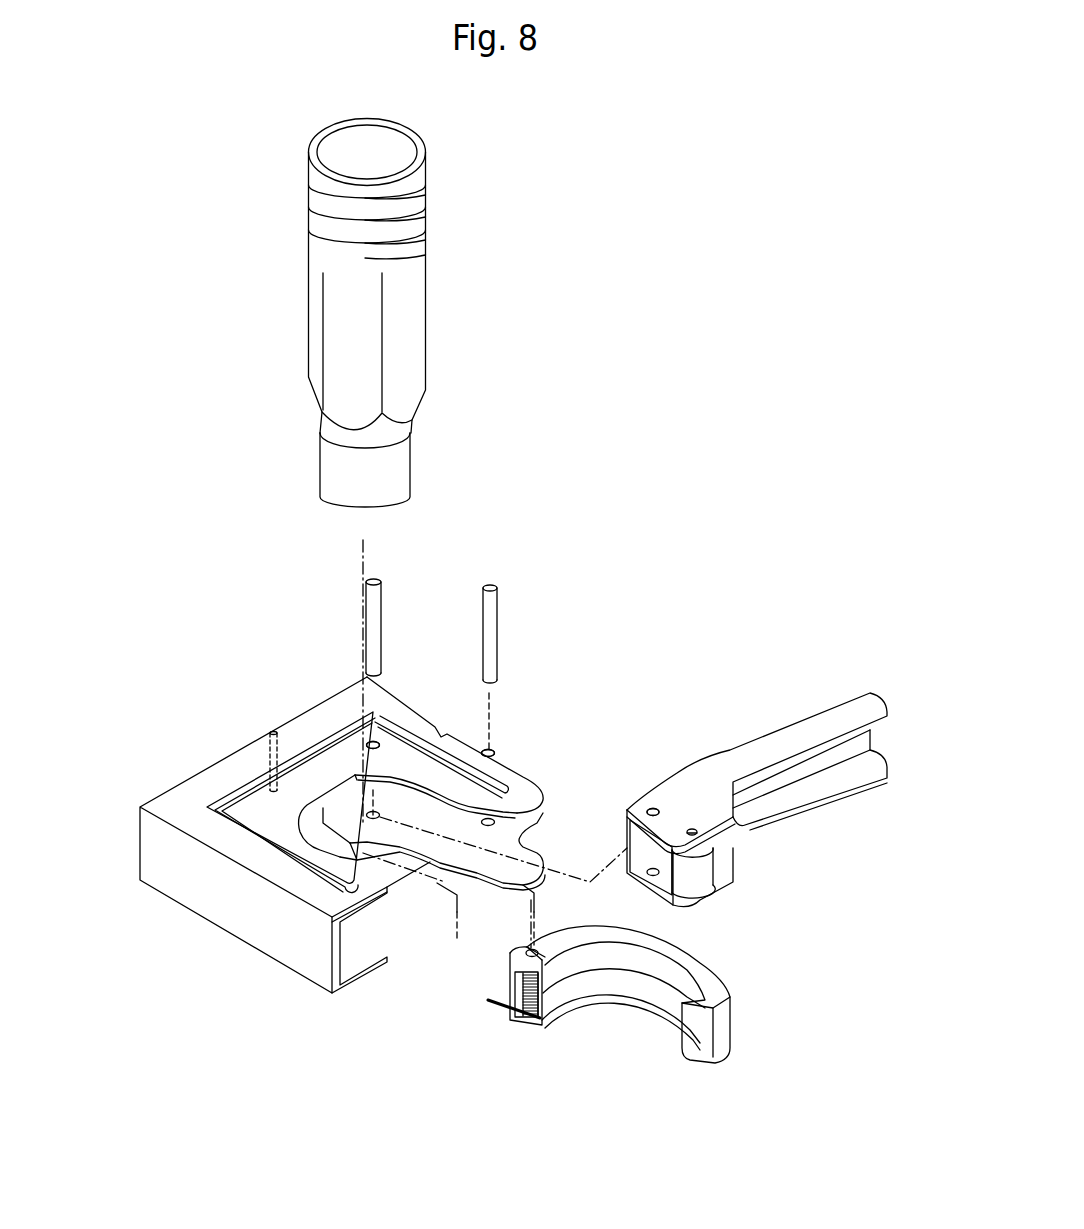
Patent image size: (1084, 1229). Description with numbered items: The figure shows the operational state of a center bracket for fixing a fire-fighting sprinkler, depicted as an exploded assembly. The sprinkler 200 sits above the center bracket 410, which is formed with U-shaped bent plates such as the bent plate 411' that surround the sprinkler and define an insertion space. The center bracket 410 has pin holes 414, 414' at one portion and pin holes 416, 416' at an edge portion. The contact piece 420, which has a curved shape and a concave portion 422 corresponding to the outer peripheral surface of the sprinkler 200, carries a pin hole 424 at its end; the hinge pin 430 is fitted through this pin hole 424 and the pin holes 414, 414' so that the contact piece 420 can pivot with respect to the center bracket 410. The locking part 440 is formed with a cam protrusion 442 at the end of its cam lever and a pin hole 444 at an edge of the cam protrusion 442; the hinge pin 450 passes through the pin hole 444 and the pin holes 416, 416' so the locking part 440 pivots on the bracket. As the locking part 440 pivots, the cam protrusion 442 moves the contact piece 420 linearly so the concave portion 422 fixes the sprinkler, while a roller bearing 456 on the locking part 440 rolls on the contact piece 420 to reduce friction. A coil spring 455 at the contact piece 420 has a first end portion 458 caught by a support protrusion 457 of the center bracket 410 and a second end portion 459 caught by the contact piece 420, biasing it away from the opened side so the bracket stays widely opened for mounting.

The sprinkler 200 is at (447, 411).
The center bracket 410 is at (175, 913).
The bent plate 411' is at (255, 987).
The pin hole 414 is at (272, 714).
The pin hole 414' is at (240, 788).
The pin hole 416 is at (455, 791).
The pin hole 416' is at (550, 786).
The contact piece 420 is at (722, 1013).
The concave portion 422 is at (647, 952).
The pin hole 424 is at (505, 994).
The hinge pin 430 is at (370, 617).
The locking part 440 is at (731, 732).
The cam protrusion 442 is at (720, 893).
The pin hole 444 is at (653, 808).
The hinge pin 450 is at (490, 623).
The coil spring 455 is at (535, 973).
The roller bearing 456 is at (707, 870).
The support protrusion 457 is at (270, 750).
The first end portion 458 is at (497, 1007).
The second end portion 459 is at (563, 965).